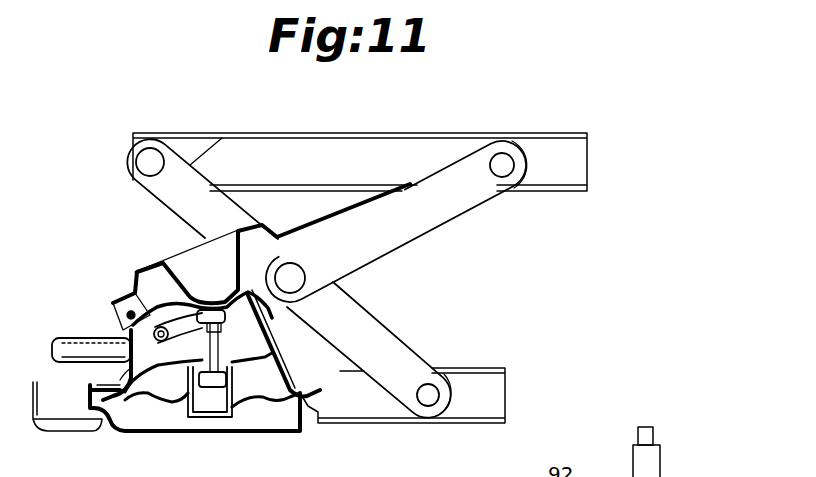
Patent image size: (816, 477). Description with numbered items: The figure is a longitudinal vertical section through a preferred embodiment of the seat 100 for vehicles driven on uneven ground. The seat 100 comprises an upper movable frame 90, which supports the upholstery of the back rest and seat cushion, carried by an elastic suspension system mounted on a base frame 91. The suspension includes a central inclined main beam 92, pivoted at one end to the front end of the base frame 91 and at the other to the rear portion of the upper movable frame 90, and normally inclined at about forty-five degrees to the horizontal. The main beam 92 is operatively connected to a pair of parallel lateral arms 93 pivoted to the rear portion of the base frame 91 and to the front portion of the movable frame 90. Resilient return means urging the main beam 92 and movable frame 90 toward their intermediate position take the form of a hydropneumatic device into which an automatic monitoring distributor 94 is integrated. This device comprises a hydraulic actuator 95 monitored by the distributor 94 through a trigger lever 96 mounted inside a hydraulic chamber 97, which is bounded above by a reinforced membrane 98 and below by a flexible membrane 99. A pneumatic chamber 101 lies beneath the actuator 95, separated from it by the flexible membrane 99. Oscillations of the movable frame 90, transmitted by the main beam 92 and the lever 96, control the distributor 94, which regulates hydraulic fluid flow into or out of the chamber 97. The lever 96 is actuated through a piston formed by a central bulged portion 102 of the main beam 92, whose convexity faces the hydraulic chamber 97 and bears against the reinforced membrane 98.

The upper movable frame 90 is at (352, 152).
The base frame 91 is at (363, 423).
The main beam 92 is at (379, 196).
The lateral arms 93 is at (396, 352).
The monitoring distributor 94 is at (65, 345).
The hydraulic actuator 95 is at (288, 352).
The trigger lever 96 is at (166, 349).
The hydraulic chamber 97 is at (245, 350).
The reinforced membrane 98 is at (247, 291).
The flexible membrane 99 is at (168, 370).
The seat 100 is at (530, 118).
The pneumatic chamber 101 is at (282, 412).
The central bulged portion 102 is at (190, 255).